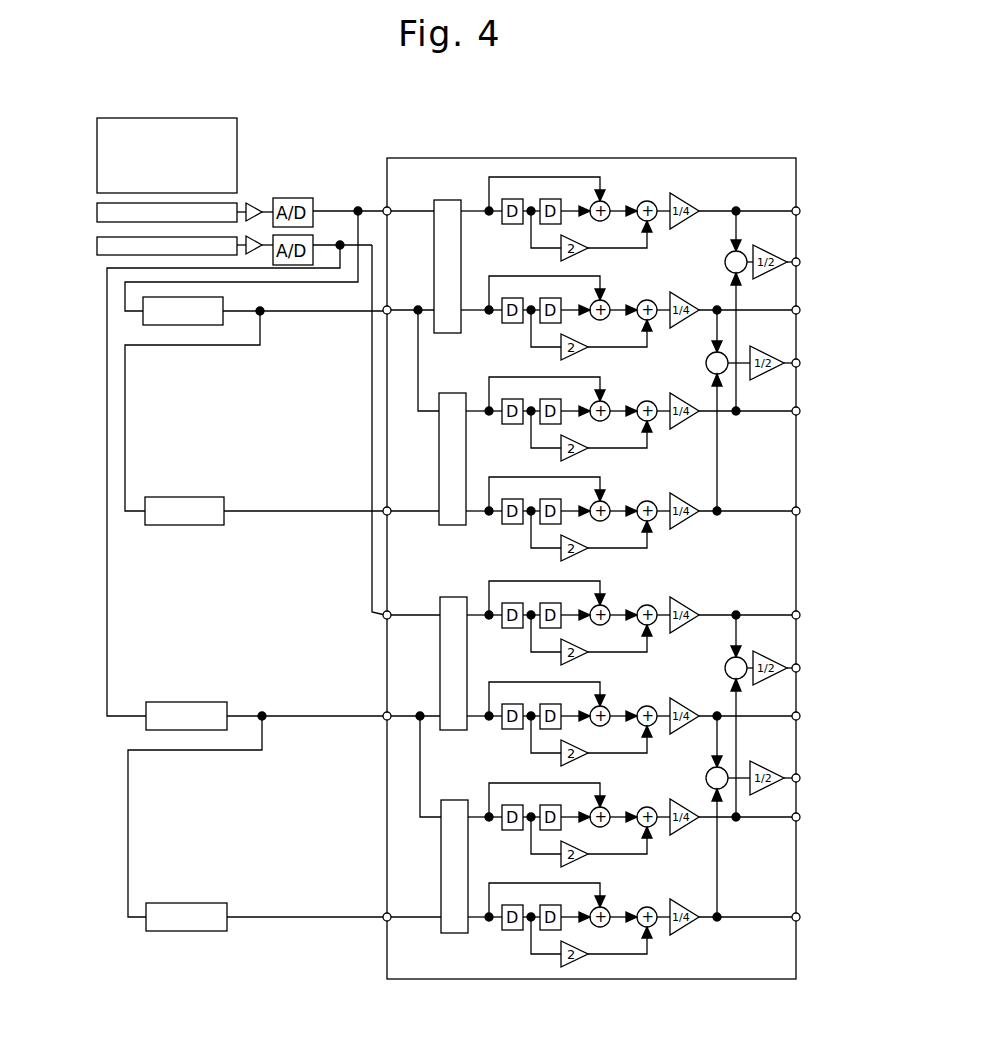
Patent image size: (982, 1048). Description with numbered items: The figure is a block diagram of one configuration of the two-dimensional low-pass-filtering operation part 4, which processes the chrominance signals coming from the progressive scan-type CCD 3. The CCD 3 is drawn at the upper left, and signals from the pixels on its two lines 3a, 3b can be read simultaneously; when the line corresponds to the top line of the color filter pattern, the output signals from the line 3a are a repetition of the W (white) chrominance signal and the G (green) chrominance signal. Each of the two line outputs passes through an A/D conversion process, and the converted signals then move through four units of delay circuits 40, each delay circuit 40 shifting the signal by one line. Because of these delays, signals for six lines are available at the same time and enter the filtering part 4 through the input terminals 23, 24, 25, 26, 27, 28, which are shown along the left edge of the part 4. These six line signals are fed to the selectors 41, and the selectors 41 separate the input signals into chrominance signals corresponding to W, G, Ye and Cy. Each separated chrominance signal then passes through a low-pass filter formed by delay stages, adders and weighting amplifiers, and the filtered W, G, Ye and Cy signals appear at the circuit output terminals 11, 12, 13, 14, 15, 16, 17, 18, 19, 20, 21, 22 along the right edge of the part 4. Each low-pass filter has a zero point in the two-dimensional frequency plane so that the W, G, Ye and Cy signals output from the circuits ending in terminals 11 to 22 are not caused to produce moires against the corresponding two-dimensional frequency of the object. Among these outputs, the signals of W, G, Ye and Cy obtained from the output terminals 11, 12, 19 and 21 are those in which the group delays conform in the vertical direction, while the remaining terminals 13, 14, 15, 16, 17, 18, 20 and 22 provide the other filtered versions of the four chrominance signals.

The progressive scan-type CCD 3 is at (237, 122).
The line 3a is at (100, 212).
The line 3b is at (100, 245).
The two-dimensional low-pass-filtering operation part 4 is at (628, 158).
The delay circuit 40 is at (176, 320).
The selector 41 is at (448, 333).
The terminal 28 is at (390, 207).
The terminal 26 is at (390, 306).
The terminal 24 is at (390, 507).
The terminal 27 is at (390, 611).
The terminal 25 is at (392, 712).
The terminal 23 is at (392, 913).
The output terminal 22 is at (800, 205).
The output terminal 14 is at (800, 257).
The output terminal 21 is at (800, 305).
The output terminal 13 is at (800, 359).
The output terminal 20 is at (800, 407).
The output terminal 19 is at (800, 506).
The output terminal 18 is at (800, 610).
The output terminal 12 is at (800, 664).
The output terminal 17 is at (800, 711).
The output terminal 11 is at (800, 774).
The output terminal 16 is at (800, 813).
The output terminal 15 is at (800, 912).